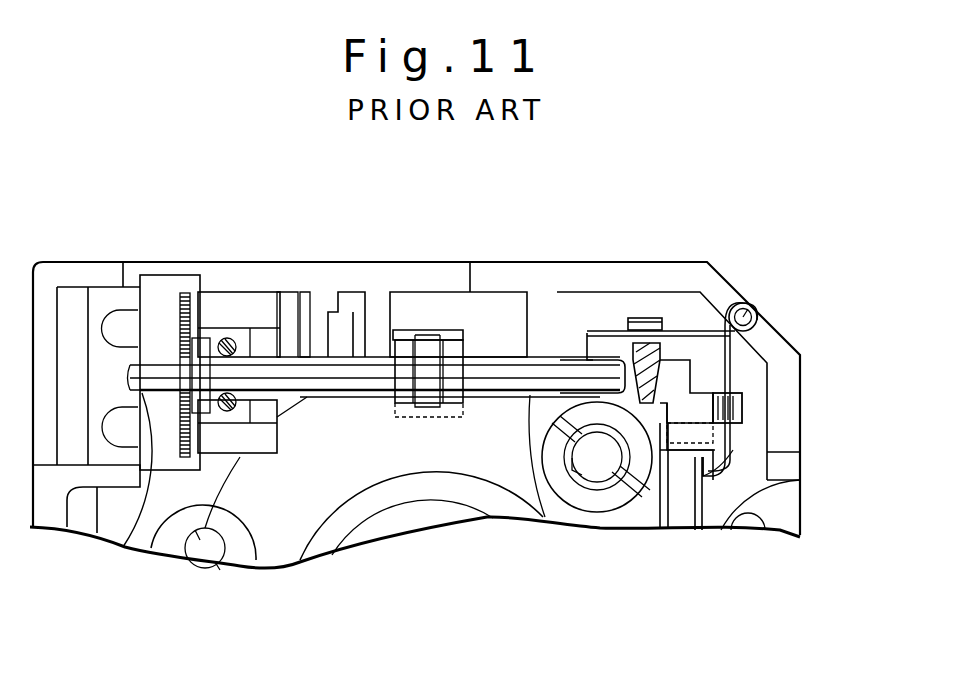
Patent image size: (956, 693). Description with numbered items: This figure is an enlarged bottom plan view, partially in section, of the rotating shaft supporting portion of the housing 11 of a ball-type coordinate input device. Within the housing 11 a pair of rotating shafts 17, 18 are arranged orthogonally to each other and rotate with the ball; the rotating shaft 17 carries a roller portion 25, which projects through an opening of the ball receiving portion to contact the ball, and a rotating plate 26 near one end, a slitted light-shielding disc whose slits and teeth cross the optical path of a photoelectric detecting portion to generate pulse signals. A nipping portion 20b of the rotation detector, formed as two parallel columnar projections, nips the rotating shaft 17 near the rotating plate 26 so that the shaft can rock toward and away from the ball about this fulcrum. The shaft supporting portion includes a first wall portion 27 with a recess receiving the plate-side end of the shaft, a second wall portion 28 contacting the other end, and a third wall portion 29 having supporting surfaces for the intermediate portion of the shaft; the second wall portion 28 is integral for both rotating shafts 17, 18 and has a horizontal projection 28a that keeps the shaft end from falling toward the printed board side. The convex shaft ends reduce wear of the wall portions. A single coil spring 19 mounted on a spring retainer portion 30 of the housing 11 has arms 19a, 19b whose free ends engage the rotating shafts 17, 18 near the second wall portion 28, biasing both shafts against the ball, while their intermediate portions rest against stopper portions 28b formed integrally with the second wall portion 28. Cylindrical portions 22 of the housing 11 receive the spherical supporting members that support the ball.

The housing 11 is at (490, 262).
The rotating shaft 17 is at (312, 348).
The rotating shaft 18 is at (682, 515).
The coil spring 19 is at (762, 332).
The arm 19a is at (717, 330).
The arm 19b is at (733, 370).
The nipping portion 20b is at (232, 398).
The cylindrical portion 22 is at (268, 565).
The roller portion 25 is at (430, 330).
The rotating plate 26 is at (183, 290).
The first wall portion 27 is at (125, 545).
The second wall portion 28 is at (625, 340).
The horizontal projection 28a is at (584, 330).
The stopper portion 28b is at (642, 330).
The third wall portion 29 is at (372, 357).
The spring retainer portion 30 is at (750, 306).